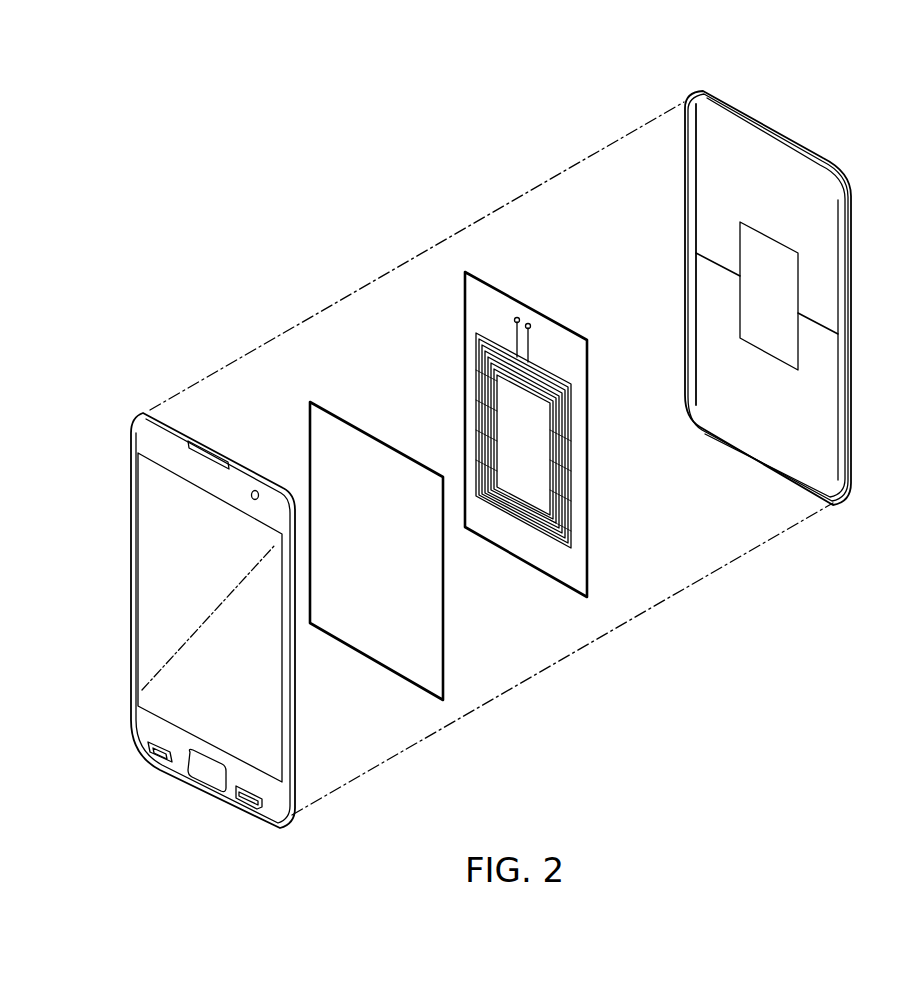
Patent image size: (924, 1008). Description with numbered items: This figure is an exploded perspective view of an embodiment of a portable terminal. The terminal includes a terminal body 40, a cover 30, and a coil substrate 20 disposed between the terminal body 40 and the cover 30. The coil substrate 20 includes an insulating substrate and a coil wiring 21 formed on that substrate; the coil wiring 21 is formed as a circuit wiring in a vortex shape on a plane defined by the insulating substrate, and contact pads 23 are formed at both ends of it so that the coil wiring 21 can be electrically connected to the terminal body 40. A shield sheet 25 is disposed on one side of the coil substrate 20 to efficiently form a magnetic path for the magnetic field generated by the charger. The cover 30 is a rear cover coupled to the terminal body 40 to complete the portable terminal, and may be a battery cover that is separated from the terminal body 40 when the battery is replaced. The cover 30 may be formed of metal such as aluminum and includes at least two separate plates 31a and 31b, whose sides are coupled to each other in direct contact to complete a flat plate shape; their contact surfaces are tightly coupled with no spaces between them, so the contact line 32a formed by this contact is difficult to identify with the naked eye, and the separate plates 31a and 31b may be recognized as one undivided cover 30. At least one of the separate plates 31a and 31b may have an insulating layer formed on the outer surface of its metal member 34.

The coil substrate 20 is at (532, 415).
The coil wiring 21 is at (573, 497).
The contact pads 23 is at (517, 318).
The shield sheet 25 is at (337, 448).
The cover 30 is at (754, 288).
The separate plate 31a is at (696, 176).
The separate plate 31b is at (830, 462).
The contact line 32a is at (700, 284).
The metal member 34 is at (790, 282).
The terminal body 40 is at (152, 440).